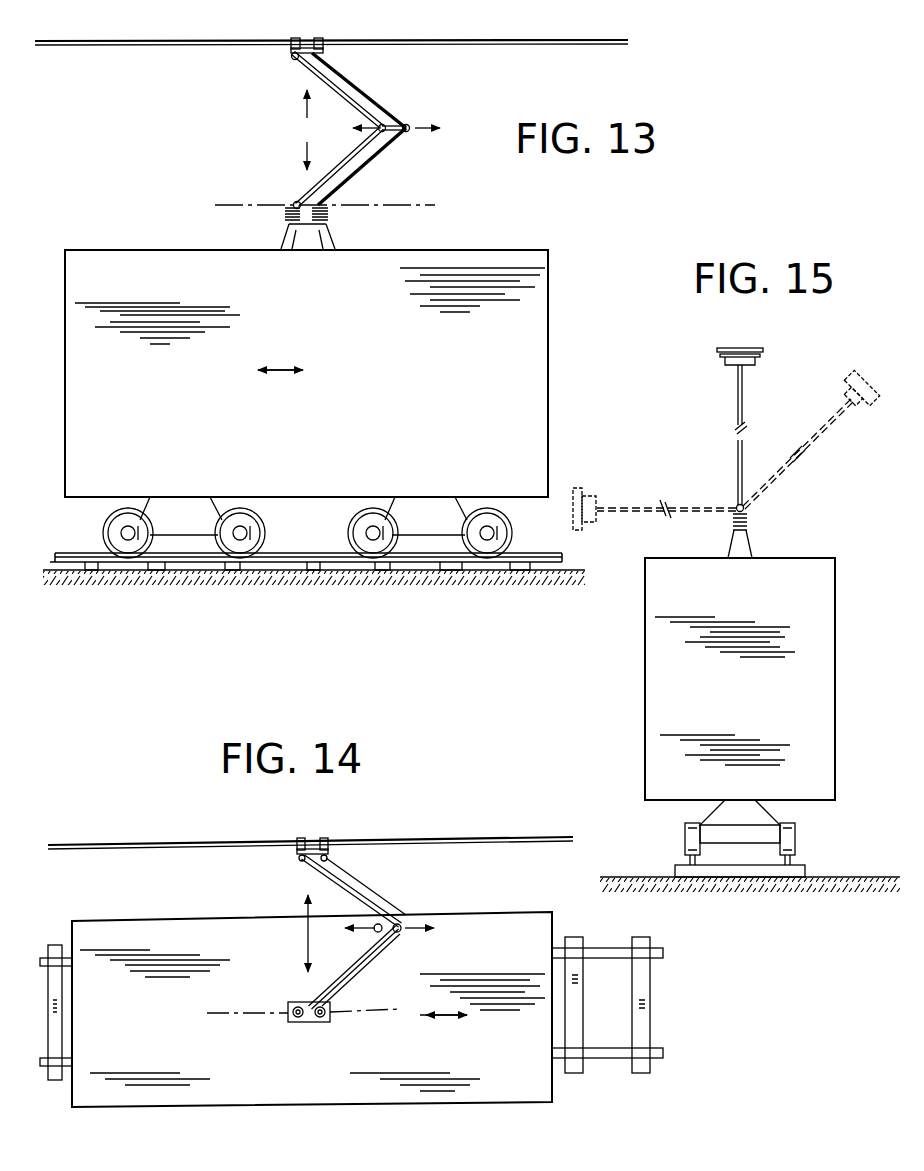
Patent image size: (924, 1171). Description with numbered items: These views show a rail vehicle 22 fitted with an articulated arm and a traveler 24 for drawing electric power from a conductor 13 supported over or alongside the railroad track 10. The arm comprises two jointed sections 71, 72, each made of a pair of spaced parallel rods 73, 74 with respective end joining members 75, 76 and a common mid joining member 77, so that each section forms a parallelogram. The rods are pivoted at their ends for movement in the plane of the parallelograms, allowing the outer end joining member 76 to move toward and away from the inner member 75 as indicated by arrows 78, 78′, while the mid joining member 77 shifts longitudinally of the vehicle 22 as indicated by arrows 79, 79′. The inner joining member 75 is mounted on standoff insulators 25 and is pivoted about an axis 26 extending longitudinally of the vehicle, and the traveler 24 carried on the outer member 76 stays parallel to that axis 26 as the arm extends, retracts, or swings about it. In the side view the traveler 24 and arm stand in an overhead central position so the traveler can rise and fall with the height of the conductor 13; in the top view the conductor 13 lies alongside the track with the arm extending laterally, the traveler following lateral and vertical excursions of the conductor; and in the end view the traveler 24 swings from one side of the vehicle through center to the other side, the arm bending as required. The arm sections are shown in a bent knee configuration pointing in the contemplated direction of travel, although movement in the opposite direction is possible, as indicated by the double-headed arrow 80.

In FIG. 14, the railroad track 10 is at (58, 1025).
In FIG. 15, the railroad track 10 is at (805, 866).
In FIG. 13, the conductor 13 is at (488, 48).
In FIG. 14, the conductor 13 is at (491, 834).
In FIG. 15, the conductor 13 is at (743, 347).
In FIG. 13, the vehicle 22 is at (520, 346).
In FIG. 14, the vehicle 22 is at (332, 1092).
In FIG. 15, the vehicle 22 is at (815, 652).
In FIG. 13, the traveler 24 is at (309, 38).
In FIG. 14, the traveler 24 is at (316, 834).
In FIG. 15, the traveler 24 is at (768, 356).
In FIG. 13, the standoff insulators 25 is at (290, 215).
In FIG. 13, the axis 26 is at (419, 207).
In FIG. 14, the axis 26 is at (222, 1014).
In FIG. 15, the axis 26 is at (745, 508).
In FIG. 13, the jointed section 71 is at (372, 160).
In FIG. 14, the jointed section 71 is at (352, 968).
In FIG. 15, the jointed section 71 is at (735, 465).
In FIG. 13, the jointed section 72 is at (340, 80).
In FIG. 14, the jointed section 72 is at (350, 893).
In FIG. 15, the jointed section 72 is at (735, 388).
In FIG. 13, the rod 73 is at (336, 182).
In FIG. 13, the rod 74 is at (367, 106).
In FIG. 13, the end joining member 75 is at (308, 200).
In FIG. 13, the end joining member 76 is at (302, 63).
In FIG. 13, the mid joining member 77 is at (400, 126).
In FIG. 13, the arrow 78 is at (304, 158).
In FIG. 13, the arrow 78′ is at (305, 108).
In FIG. 13, the arrow 79 is at (428, 131).
In FIG. 13, the arrow 79′ is at (361, 131).
In FIG. 13, the double-headed arrow 80 is at (283, 368).
In FIG. 14, the double-headed arrow 80 is at (446, 1019).